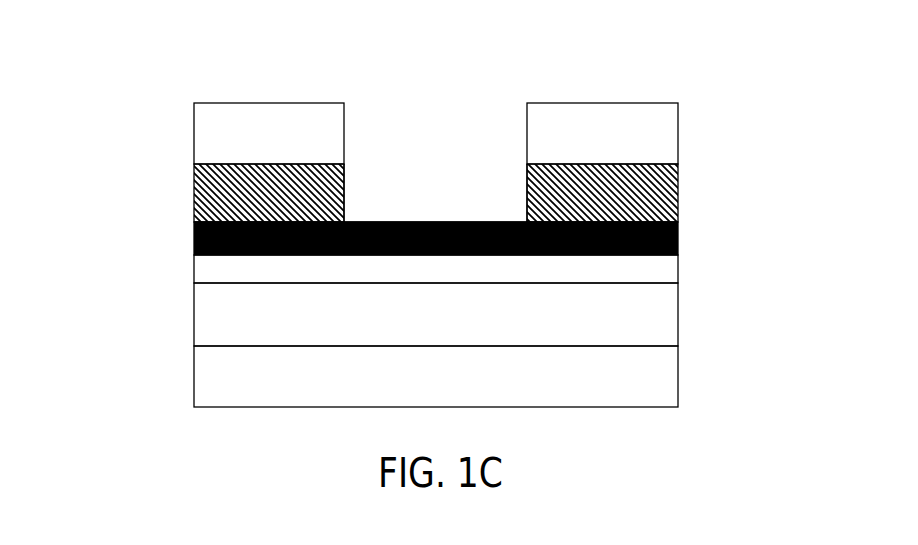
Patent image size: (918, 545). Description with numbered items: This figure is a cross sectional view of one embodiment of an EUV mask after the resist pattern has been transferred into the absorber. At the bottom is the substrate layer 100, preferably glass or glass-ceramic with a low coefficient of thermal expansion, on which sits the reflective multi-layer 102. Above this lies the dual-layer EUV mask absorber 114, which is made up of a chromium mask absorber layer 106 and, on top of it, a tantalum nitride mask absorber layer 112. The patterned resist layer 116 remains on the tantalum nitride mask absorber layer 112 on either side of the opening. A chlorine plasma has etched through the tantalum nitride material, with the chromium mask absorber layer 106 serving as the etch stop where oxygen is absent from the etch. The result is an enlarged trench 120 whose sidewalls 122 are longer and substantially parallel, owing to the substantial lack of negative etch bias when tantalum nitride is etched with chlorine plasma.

The substrate layer 100 is at (195, 385).
The reflective multi-layer 102 is at (195, 317).
The chromium mask absorber layer 106 is at (195, 272).
The tantalum nitride mask absorber layer 112 is at (193, 202).
The dual-layer EUV mask absorber 114 is at (73, 173).
The resist layer 116 is at (678, 135).
The enlarged trench 120 is at (477, 97).
The sidewalls 122 is at (525, 190).